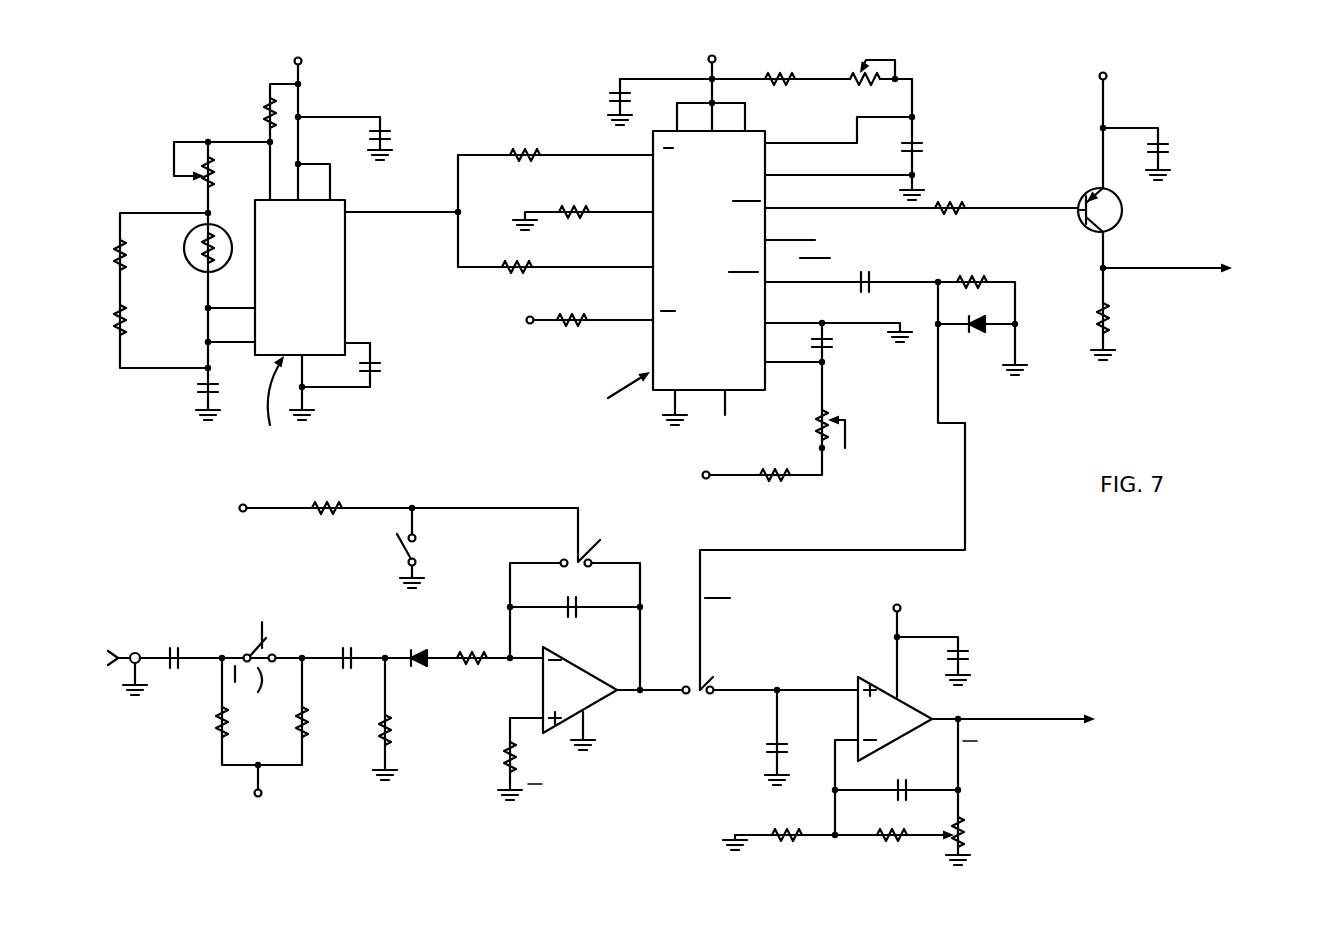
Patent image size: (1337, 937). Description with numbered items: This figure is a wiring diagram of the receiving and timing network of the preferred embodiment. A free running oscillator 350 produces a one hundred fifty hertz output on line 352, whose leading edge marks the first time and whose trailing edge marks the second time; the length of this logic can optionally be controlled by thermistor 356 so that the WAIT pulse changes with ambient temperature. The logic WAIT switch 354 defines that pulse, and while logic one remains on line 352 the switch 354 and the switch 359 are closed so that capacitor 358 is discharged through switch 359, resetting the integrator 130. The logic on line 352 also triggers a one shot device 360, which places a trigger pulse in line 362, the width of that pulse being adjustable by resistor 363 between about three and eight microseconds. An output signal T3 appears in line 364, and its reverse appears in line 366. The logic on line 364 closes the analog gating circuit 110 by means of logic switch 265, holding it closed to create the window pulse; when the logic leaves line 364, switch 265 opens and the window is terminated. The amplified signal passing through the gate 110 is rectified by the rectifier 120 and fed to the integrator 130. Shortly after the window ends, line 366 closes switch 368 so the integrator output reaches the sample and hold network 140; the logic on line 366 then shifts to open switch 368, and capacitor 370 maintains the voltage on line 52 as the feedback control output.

The line 52 is at (1030, 719).
The analog gating circuit 110 is at (264, 582).
The rectifier 120 is at (392, 648).
The integrator 130 is at (653, 551).
The sample and hold network 140 is at (827, 633).
The logic switch 265 is at (262, 671).
The free running oscillator 350 is at (345, 275).
The line 352 is at (405, 216).
The logic WAIT switch 354 is at (418, 546).
The thermistor 356 is at (186, 258).
The capacitor 358 is at (590, 600).
The switch 359 is at (600, 540).
The one shot device 360 is at (653, 228).
The line 362 is at (1175, 270).
The resistor 363 is at (890, 67).
The line 364 is at (817, 240).
The line 366 is at (965, 505).
The switch 368 is at (713, 677).
The capacitor 370 is at (780, 745).